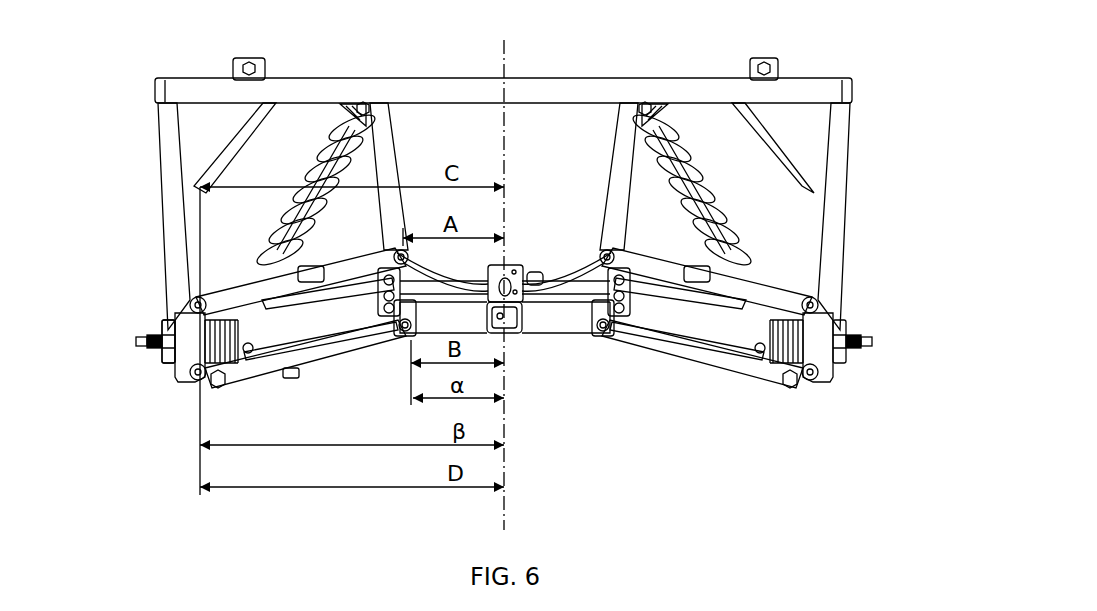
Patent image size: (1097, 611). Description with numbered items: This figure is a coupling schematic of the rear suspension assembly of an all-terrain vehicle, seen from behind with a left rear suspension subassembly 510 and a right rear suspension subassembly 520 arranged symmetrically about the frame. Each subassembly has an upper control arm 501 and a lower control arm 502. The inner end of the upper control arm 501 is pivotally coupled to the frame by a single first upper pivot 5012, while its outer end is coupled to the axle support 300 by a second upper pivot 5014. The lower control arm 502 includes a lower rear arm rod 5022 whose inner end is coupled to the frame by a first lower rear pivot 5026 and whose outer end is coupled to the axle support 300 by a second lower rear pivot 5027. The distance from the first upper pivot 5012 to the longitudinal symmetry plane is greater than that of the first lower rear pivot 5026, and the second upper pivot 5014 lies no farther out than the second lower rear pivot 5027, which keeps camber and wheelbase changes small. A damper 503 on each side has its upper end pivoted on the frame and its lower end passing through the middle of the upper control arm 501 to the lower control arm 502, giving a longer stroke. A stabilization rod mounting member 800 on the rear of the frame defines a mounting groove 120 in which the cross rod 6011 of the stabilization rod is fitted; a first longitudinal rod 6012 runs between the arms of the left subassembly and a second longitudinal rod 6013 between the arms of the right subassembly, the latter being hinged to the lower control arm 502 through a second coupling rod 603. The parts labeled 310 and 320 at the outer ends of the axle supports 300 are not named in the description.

The damper 503 is at (340, 113).
The upper control arm 501 is at (255, 284).
The first upper pivot 5012 is at (396, 252).
The second upper pivot 5014 is at (195, 299).
The lower control arm 502 is at (790, 382).
The lower rear arm rod 5022 is at (290, 379).
The first lower rear pivot 5026 is at (402, 338).
The second lower rear pivot 5027 is at (196, 380).
The cross rod 6011 is at (575, 290).
The first longitudinal rod 6012 is at (308, 272).
The second longitudinal rod 6013 is at (700, 272).
The second coupling rod 603 is at (616, 340).
The mounting groove 120 is at (540, 333).
The stabilization rod mounting member 800 is at (572, 318).
The axle support 300 is at (160, 345).
The left axle stub 310 is at (146, 338).
The right axle stub 320 is at (866, 338).
The left rear suspension subassembly 510 is at (170, 372).
The right rear suspension subassembly 520 is at (846, 352).